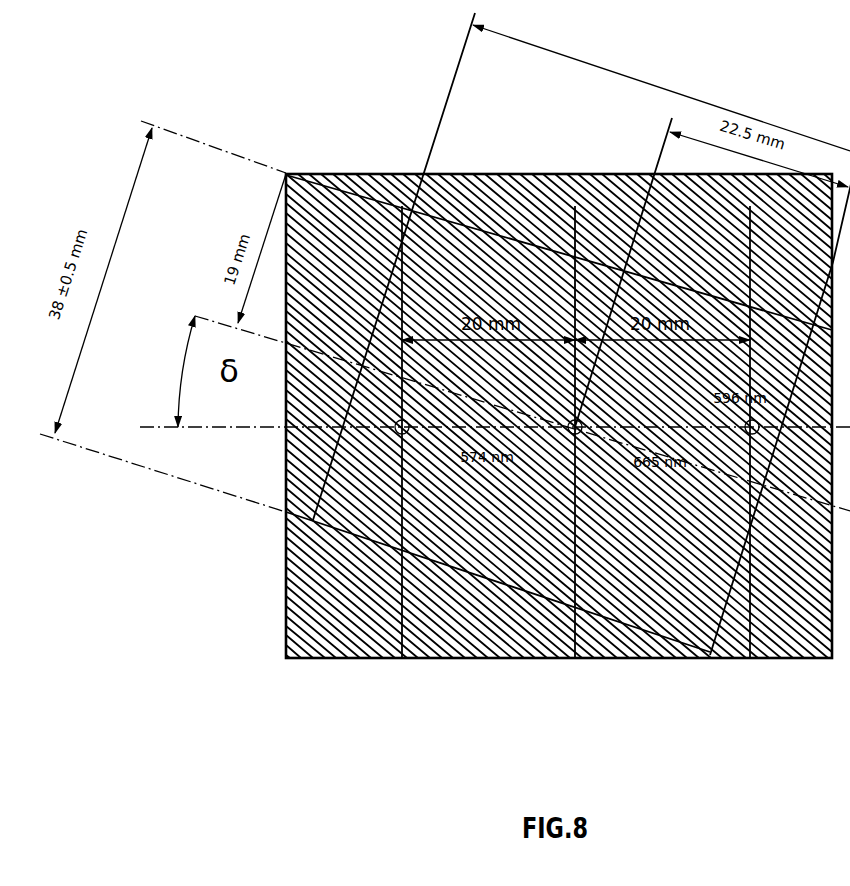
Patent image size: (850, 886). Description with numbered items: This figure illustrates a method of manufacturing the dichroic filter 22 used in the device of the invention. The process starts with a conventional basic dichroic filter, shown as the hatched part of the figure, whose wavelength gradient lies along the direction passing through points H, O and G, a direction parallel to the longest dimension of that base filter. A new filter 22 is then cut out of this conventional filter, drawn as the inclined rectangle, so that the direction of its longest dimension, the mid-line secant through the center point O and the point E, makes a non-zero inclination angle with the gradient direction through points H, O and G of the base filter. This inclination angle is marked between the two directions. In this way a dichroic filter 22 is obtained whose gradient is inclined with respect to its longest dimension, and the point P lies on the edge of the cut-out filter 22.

The dichroic filter 22 is at (712, 658).
The point P on rotated plate edge P is at (559, 266).
The point H of gradient direction HOG H is at (495, 440).
The center point O is at (522, 413).
The point G of gradient direction HOG G is at (780, 419).
The point E of secant DOE E is at (407, 543).